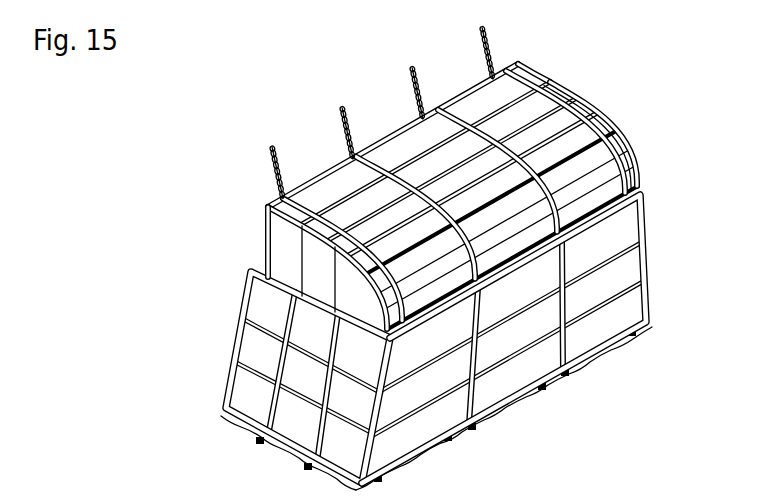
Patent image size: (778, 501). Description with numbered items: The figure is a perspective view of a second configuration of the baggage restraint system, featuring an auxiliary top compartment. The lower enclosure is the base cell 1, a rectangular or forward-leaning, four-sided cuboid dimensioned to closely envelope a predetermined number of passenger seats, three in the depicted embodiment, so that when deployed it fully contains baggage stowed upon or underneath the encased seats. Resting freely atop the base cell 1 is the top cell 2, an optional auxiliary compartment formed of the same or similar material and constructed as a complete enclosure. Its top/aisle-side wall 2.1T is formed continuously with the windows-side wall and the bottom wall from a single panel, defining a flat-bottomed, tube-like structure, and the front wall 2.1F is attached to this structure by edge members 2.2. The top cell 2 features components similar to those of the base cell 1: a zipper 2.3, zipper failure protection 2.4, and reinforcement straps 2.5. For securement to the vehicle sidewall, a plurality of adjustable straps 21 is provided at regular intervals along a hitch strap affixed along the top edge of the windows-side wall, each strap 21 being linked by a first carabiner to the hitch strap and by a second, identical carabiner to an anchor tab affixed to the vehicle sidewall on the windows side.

The base cell 1 is at (190, 332).
The top cell 2 is at (405, 165).
The adjustable strap 21 is at (522, 30).
The top/aisle-side wall 2.1T is at (432, 160).
The front wall 2.1F is at (278, 268).
The edge member 2.2 is at (430, 195).
The zipper 2.3 is at (541, 202).
The zipper failure protection 2.4 is at (632, 127).
The reinforcement strap 2.5 is at (578, 68).